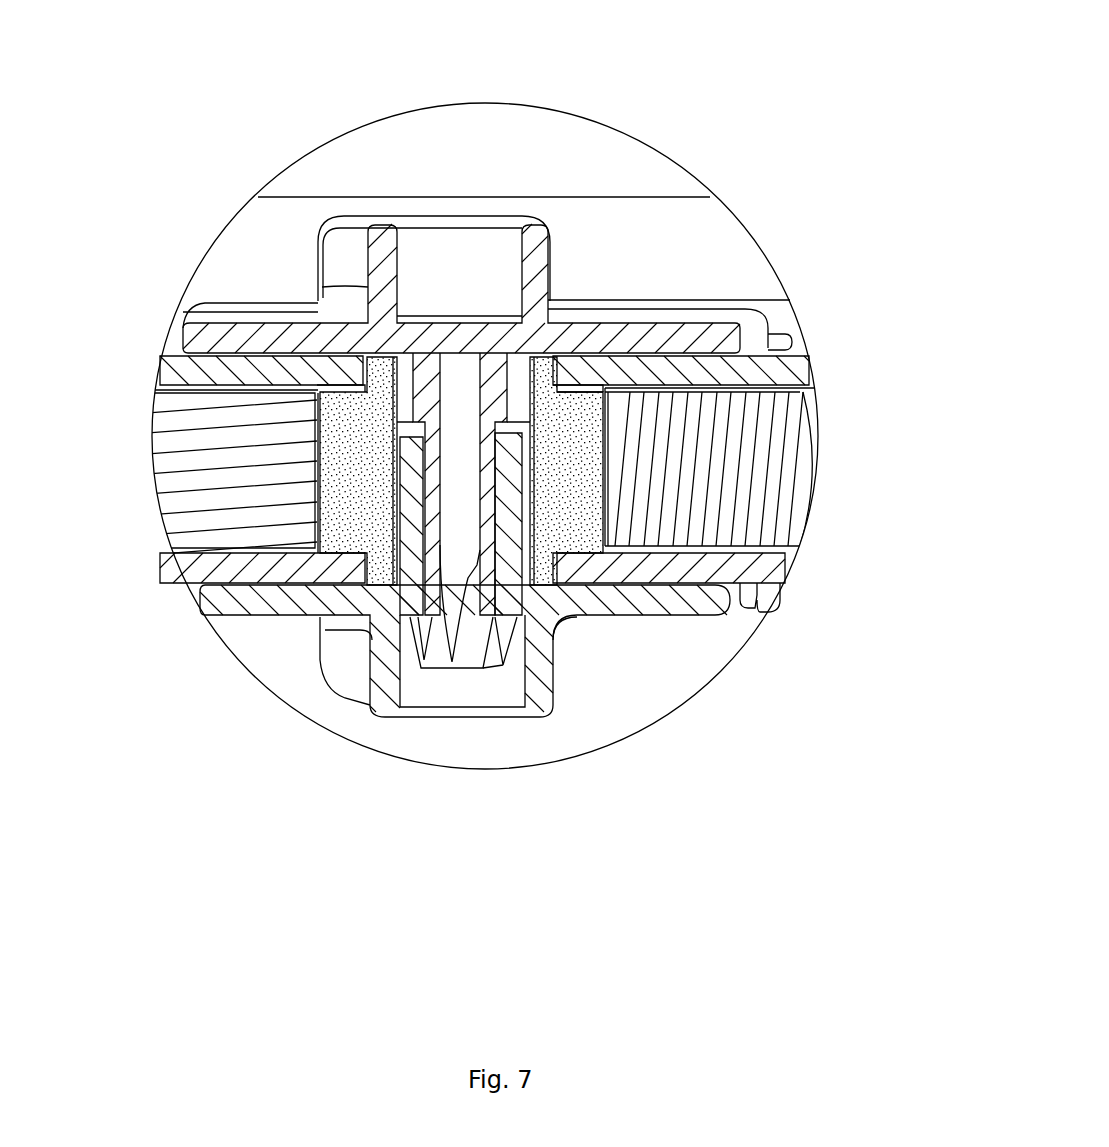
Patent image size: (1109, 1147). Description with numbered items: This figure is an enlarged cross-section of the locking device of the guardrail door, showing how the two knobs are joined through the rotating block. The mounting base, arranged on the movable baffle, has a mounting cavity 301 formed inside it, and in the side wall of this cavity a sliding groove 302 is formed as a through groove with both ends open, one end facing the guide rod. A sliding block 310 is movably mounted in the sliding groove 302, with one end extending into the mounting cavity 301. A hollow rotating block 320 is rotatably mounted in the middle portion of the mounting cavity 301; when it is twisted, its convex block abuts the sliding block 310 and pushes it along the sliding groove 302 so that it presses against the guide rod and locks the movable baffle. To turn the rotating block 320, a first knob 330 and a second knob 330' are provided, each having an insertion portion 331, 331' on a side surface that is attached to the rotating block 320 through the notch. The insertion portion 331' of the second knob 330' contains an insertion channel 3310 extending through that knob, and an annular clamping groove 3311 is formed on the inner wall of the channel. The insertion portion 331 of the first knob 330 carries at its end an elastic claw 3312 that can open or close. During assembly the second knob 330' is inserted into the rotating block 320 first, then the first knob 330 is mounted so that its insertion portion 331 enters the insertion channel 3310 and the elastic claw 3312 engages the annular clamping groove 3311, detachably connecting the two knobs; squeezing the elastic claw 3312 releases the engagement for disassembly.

The mounting cavity 301 is at (620, 382).
The sliding groove 302 is at (210, 581).
The sliding block 310 is at (215, 492).
The rotating block 320 is at (567, 423).
The first knob 330 is at (440, 258).
The second knob 330' is at (375, 674).
The insertion portion 331 is at (220, 460).
The insertion portion 331' is at (664, 551).
The insertion channel 3310 is at (545, 584).
The annular clamping groove 3311 is at (550, 622).
The elastic claw 3312 is at (508, 622).